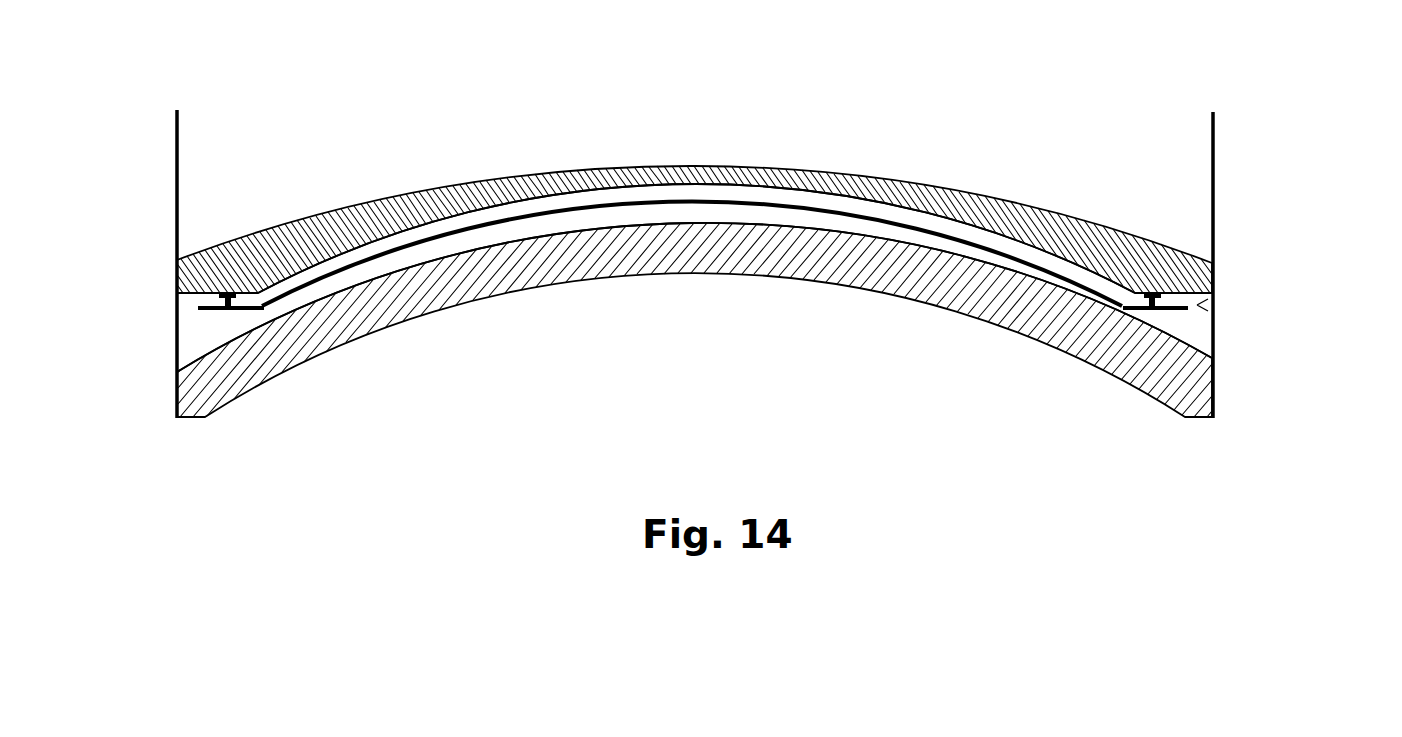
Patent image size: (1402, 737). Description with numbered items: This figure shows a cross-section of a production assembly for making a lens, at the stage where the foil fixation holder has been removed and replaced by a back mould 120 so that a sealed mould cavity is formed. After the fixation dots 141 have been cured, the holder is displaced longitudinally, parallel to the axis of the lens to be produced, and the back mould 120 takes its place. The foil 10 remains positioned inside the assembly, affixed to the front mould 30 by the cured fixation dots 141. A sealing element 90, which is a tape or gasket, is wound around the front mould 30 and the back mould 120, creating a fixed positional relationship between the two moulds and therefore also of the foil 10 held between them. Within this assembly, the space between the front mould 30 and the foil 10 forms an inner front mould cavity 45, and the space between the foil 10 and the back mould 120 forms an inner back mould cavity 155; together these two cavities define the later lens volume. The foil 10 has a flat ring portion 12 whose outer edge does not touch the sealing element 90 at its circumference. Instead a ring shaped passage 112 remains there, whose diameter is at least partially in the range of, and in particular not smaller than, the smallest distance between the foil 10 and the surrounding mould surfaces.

The foil 10 is at (705, 198).
The flat ring portion 12 is at (1166, 308).
The front mould 30 is at (366, 205).
The inner front mould cavity 45 is at (572, 178).
The sealing element 90 is at (176, 138).
The ring shaped passage 112 is at (1197, 305).
The back mould 120 is at (246, 374).
The fixation dots 141 is at (218, 298).
The inner back mould cavity 155 is at (540, 221).